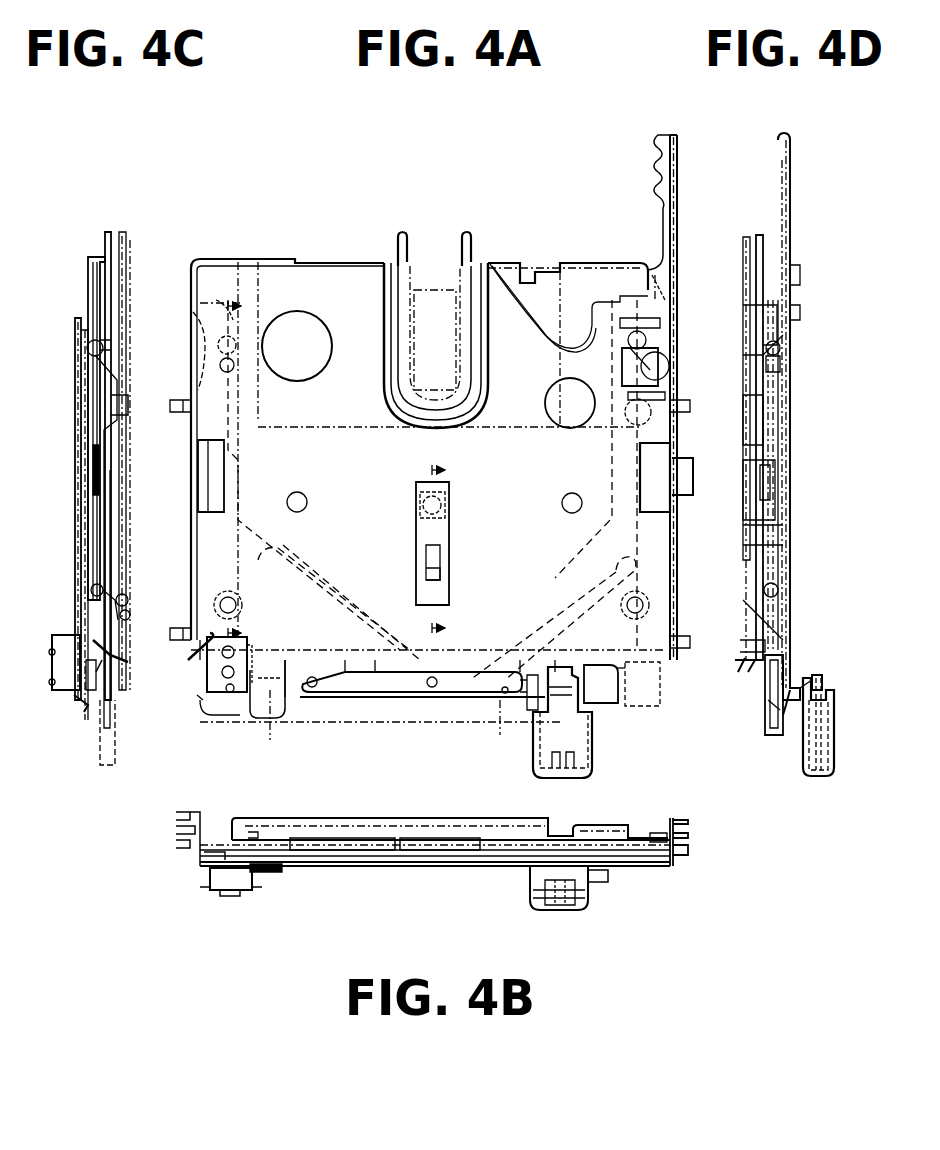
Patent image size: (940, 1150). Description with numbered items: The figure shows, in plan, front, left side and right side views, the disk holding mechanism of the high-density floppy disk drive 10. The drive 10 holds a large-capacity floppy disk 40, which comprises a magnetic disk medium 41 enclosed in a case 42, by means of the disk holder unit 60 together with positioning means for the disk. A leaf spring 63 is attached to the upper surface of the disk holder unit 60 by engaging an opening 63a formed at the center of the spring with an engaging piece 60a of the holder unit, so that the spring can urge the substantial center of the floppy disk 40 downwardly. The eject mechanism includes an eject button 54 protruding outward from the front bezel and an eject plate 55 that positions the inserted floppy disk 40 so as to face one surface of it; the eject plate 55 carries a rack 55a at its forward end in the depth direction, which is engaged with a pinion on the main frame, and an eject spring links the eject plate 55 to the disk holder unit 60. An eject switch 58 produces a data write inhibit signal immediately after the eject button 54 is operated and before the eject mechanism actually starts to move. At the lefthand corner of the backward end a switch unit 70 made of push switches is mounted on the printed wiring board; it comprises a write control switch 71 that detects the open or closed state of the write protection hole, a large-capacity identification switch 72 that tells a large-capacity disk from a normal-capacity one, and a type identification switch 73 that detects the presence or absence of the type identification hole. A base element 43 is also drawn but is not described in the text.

In FIG. 4A, the floppy disk drive 10 is at (264, 238).
In FIG. 4A, the floppy disk 40 is at (252, 735).
In FIG. 4A, the magnetic disk medium 41 is at (445, 337).
In FIG. 4C, the magnetic disk medium 41 is at (110, 706).
In FIG. 4B, the magnetic disk medium 41 is at (330, 865).
In FIG. 4C, the case 42 is at (112, 730).
In FIG. 4D, the case 42 is at (772, 735).
In FIG. 4B, the case 42 is at (335, 845).
In FIG. 4B, the base plate 43 is at (445, 865).
In FIG. 4A, the eject button 54 is at (592, 748).
In FIG. 4D, the eject button 54 is at (833, 758).
In FIG. 4B, the eject button 54 is at (568, 905).
In FIG. 4A, the eject plate 55 is at (366, 698).
In FIG. 4C, the eject plate 55 is at (78, 330).
In FIG. 4D, the eject plate 55 is at (788, 212).
In FIG. 4A, the rack 55a is at (675, 135).
In FIG. 4A, the eject switch 58 is at (506, 720).
In FIG. 4D, the eject switch 58 is at (826, 685).
In FIG. 4A, the disk holder unit 60 is at (335, 263).
In FIG. 4C, the disk holder unit 60 is at (108, 238).
In FIG. 4D, the disk holder unit 60 is at (758, 235).
In FIG. 4A, the engaging piece 60a is at (428, 575).
In FIG. 4A, the leaf spring 63 is at (440, 530).
In FIG. 4A, the opening 63a is at (438, 560).
In FIG. 4A, the switch unit 70 is at (207, 680).
In FIG. 4C, the switch unit 70 is at (55, 688).
In FIG. 4B, the switch unit 70 is at (215, 888).
In FIG. 4A, the write control switch 71 is at (222, 702).
In FIG. 4C, the write control switch 71 is at (82, 715).
In FIG. 4B, the write control switch 71 is at (212, 862).
In FIG. 4A, the large-capacity identification switch 72 is at (207, 665).
In FIG. 4C, the large-capacity identification switch 72 is at (80, 656).
In FIG. 4A, the type identification switch 73 is at (202, 650).
In FIG. 4C, the type identification switch 73 is at (92, 645).